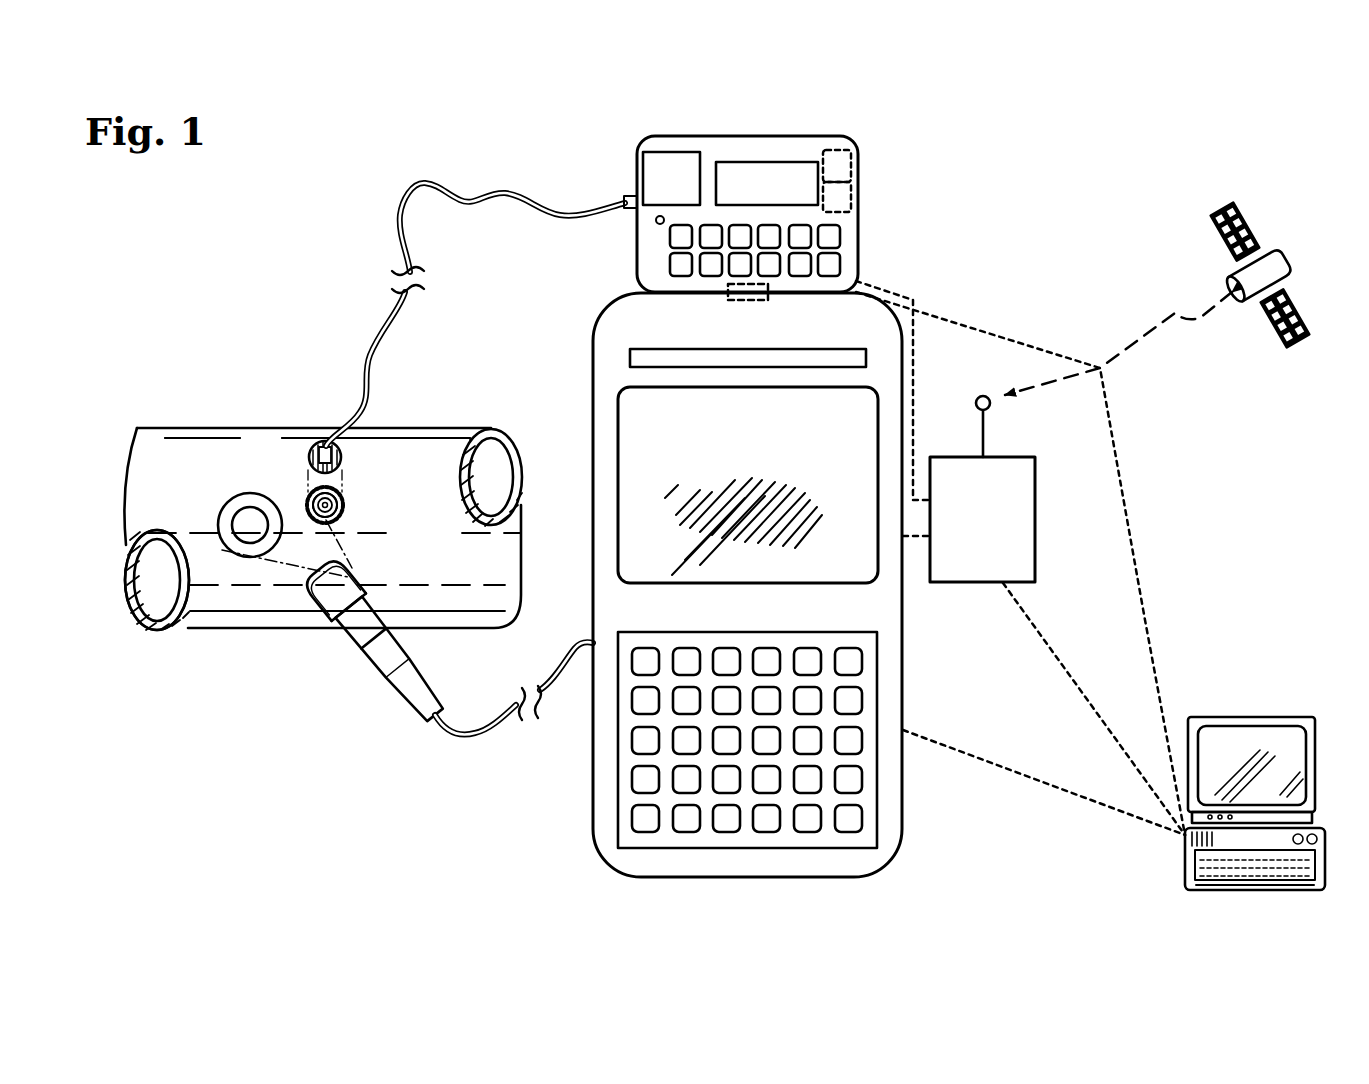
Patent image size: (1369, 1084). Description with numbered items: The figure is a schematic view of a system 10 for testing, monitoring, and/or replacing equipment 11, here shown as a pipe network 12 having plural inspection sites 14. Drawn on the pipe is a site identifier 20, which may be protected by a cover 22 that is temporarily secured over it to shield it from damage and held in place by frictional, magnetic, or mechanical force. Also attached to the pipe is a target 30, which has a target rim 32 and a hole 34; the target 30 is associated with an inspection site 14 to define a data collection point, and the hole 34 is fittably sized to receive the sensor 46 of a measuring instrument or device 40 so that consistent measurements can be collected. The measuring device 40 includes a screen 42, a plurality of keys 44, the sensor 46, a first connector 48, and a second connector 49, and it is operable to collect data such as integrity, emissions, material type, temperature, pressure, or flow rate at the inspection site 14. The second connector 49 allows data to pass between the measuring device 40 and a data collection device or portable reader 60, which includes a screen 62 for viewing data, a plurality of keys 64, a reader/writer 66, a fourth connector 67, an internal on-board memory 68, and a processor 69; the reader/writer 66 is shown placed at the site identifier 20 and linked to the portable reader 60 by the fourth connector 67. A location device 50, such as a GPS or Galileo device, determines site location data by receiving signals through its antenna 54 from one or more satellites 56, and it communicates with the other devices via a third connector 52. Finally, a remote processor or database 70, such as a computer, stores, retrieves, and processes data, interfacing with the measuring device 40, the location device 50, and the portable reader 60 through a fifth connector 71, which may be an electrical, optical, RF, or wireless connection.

The system 10 is at (1021, 156).
The equipment 11 is at (128, 622).
The pipe network 12 is at (112, 440).
The inspection site 14 is at (296, 428).
The site identifier 20 is at (326, 522).
The cover 22 is at (346, 506).
The target 30 is at (246, 487).
The target rim 32 is at (232, 522).
The hole 34 is at (253, 512).
The measuring instrument or device 40 is at (918, 651).
The screen 42 is at (809, 557).
The plurality of keys 44 is at (863, 761).
The sensor 46 is at (356, 648).
The first connector 48 is at (478, 738).
The second connector 49 is at (745, 303).
The location device 50 is at (1050, 528).
The third connector 52 is at (916, 357).
The antenna 54 is at (984, 428).
The satellite 56 is at (1284, 263).
The data collection device or portable reader 60 is at (874, 150).
The screen 62 is at (776, 196).
The plurality of keys 64 is at (856, 248).
The reader/writer 66 is at (343, 456).
The fourth connector 67 is at (400, 233).
The internal on-board memory 68 is at (858, 166).
The processor 69 is at (858, 200).
The remote processor or database 70 is at (1256, 714).
The fifth connector 71 is at (1000, 740).